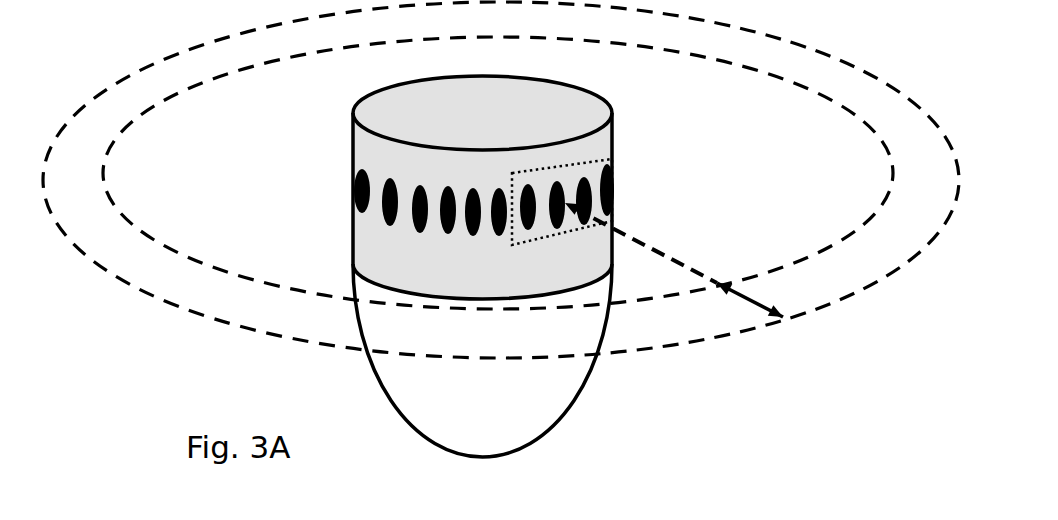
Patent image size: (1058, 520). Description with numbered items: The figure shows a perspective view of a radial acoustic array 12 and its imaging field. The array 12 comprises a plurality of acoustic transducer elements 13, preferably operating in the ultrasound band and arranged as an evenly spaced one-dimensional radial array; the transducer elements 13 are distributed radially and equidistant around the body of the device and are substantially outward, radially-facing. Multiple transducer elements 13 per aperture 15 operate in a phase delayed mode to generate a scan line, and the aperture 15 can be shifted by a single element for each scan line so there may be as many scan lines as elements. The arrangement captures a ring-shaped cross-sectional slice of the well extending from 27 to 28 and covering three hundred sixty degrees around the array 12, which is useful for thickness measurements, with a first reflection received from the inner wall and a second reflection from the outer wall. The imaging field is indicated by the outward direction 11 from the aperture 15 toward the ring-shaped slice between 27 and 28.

The direction of movement / sensing direction arrow 11 is at (687, 260).
The array 12 is at (482, 266).
The acoustic transducer elements 13 is at (353, 193).
The aperture 15 is at (581, 194).
The inner boundary of the ring-shaped cross-sectional slice 27 is at (498, 173).
The outer boundary of the ring-shaped cross-sectional slice 28 is at (501, 180).